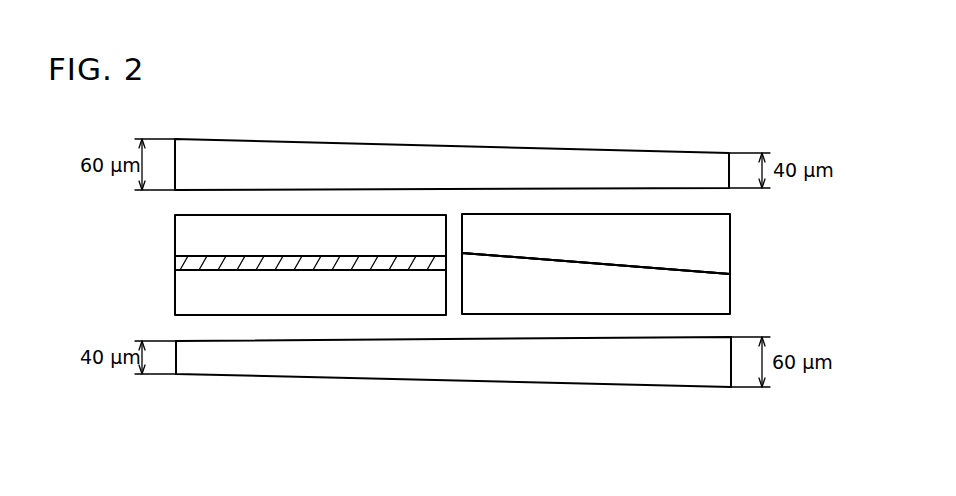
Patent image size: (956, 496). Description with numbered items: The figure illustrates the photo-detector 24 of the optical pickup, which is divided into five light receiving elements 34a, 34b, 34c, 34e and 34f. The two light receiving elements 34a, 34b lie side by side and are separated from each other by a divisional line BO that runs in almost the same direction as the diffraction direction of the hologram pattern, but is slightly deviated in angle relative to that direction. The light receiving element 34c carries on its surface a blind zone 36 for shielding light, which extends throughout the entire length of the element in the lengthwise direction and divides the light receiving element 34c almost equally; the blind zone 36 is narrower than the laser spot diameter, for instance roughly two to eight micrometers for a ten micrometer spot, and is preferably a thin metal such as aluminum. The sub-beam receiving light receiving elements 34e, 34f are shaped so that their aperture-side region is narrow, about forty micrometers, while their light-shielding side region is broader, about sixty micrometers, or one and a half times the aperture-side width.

The photo-detector 24 is at (613, 130).
The light receiving element 34a is at (717, 252).
The light receiving element 34b is at (717, 298).
The light receiving element 34c is at (175, 293).
The light receiving element 34e is at (410, 157).
The light receiving element 34f is at (443, 370).
The blind zone 36 is at (323, 262).
The boundary line between prism portions BO is at (558, 263).